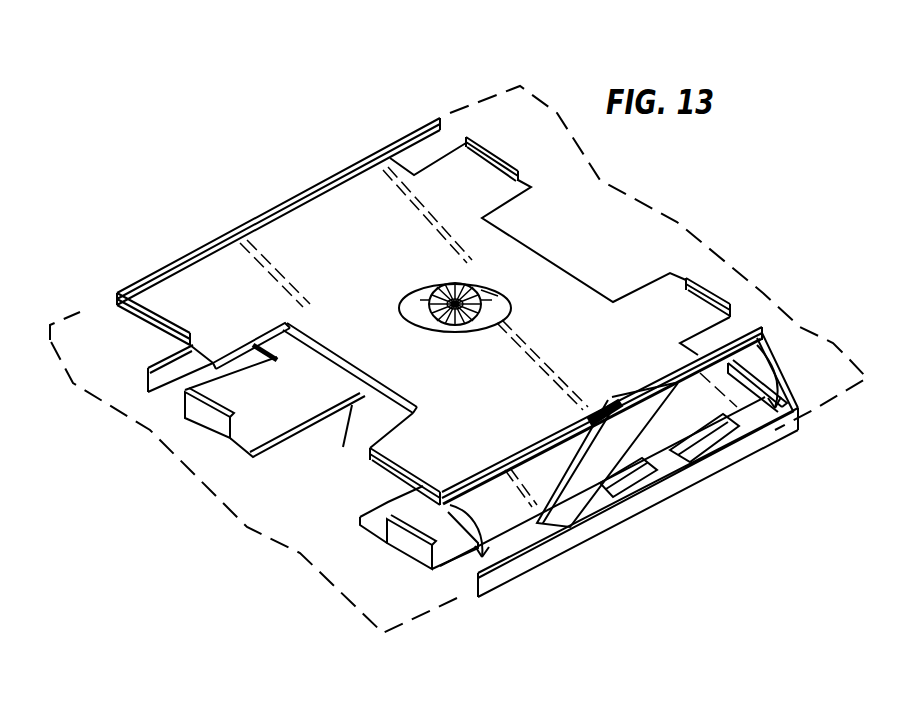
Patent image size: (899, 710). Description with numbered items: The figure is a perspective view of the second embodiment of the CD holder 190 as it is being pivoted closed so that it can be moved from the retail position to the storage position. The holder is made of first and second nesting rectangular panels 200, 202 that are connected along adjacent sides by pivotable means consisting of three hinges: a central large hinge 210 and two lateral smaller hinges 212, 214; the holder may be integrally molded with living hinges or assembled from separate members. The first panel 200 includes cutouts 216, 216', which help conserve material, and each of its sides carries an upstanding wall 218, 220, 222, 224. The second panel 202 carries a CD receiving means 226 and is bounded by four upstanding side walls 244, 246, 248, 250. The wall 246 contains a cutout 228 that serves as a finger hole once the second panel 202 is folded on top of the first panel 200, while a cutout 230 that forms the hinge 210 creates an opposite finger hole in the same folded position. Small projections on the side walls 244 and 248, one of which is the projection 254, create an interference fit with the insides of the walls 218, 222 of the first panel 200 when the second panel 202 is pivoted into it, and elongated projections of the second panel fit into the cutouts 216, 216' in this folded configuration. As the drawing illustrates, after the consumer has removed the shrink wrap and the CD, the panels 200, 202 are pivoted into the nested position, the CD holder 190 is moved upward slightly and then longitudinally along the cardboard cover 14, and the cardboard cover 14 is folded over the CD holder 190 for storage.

The CD holder 190 is at (628, 33).
The cardboard cover 14 is at (408, 605).
The first panel 200 is at (292, 411).
The second panel 202 is at (497, 395).
The central large hinge 210 is at (343, 447).
The lateral smaller hinge 212 is at (655, 415).
The lateral smaller hinge 214 is at (262, 343).
The cutout 216 is at (724, 459).
The cutout 216' is at (655, 502).
The upstanding wall 218 is at (147, 375).
The upstanding wall 220 is at (207, 422).
The upstanding wall 222 is at (616, 515).
The upstanding wall 224 is at (788, 395).
The CD receiving means 226 is at (490, 305).
The cutout 228 is at (335, 334).
The cutout 230 is at (537, 255).
The side wall 244 is at (280, 206).
The side wall 246 is at (172, 318).
The side wall 248 is at (527, 447).
The side wall 250 is at (492, 157).
The small projection 254 is at (603, 403).